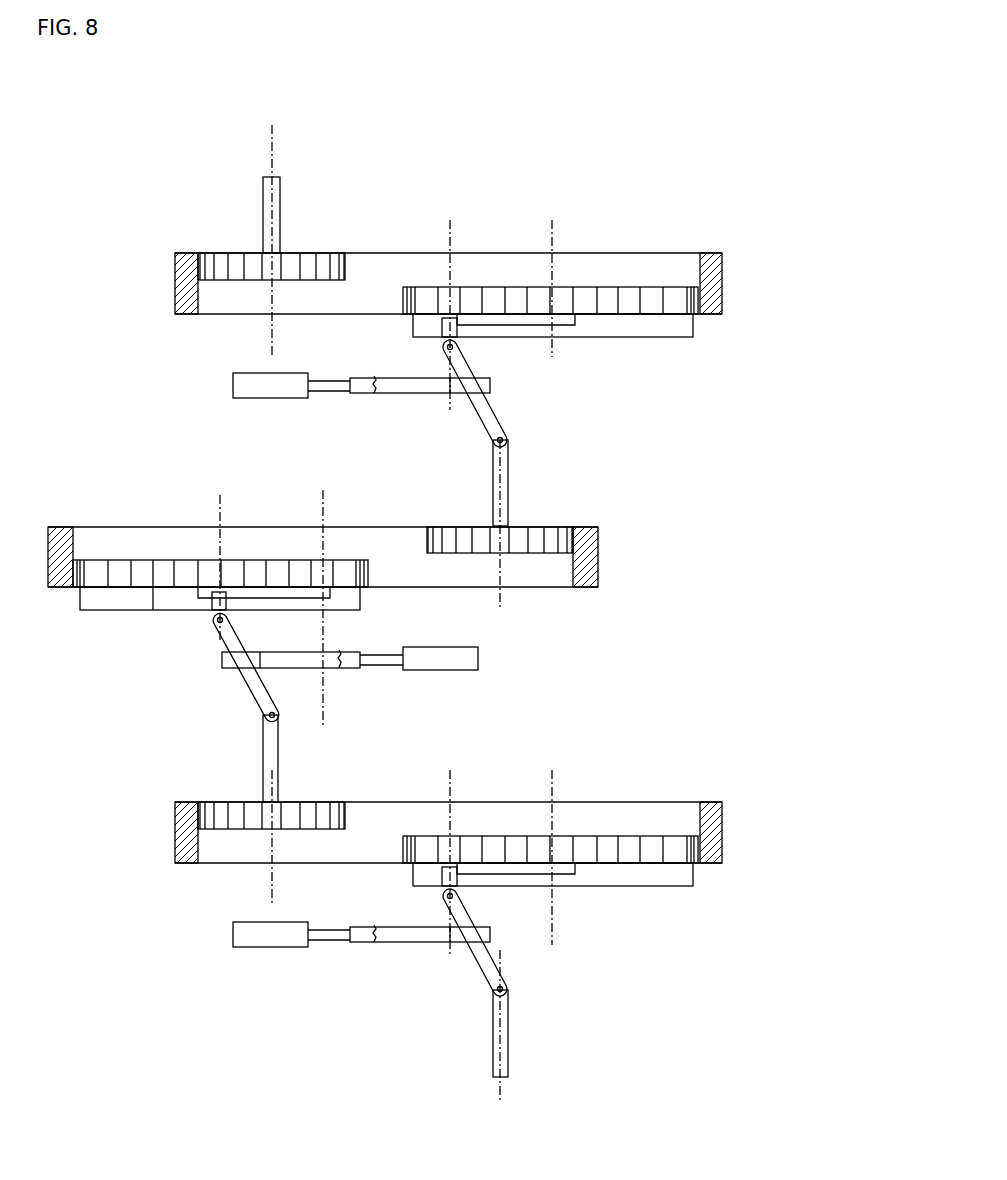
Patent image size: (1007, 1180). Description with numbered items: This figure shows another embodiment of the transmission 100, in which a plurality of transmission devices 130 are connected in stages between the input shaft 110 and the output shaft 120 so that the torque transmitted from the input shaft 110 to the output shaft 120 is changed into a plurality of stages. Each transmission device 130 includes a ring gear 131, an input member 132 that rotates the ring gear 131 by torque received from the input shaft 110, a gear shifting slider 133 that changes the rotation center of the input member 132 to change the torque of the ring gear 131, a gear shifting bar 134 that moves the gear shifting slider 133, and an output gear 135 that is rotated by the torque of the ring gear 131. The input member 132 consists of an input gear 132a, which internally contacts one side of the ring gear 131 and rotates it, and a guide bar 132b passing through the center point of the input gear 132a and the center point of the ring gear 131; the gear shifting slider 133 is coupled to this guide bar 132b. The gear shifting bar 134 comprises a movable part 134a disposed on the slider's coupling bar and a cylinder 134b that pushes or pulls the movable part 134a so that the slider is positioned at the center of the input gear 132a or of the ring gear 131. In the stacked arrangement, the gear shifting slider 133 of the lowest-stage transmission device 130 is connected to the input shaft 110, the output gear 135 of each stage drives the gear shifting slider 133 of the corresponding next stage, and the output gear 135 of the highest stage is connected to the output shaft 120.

The transmission 100 is at (630, 118).
The input shaft 110 is at (508, 470).
The output shaft 120 is at (283, 207).
The transmission device 130 is at (420, 521).
The ring gear 131 is at (718, 277).
The input member 132 is at (394, 523).
The input gear 132a is at (617, 288).
The guide bar 132b is at (660, 322).
The gear shifting slider 133 is at (490, 410).
The gear shifting bar 134 is at (358, 710).
The movable part 134a is at (358, 394).
The cylinder 134b is at (355, 455).
The output gear 135 is at (330, 250).